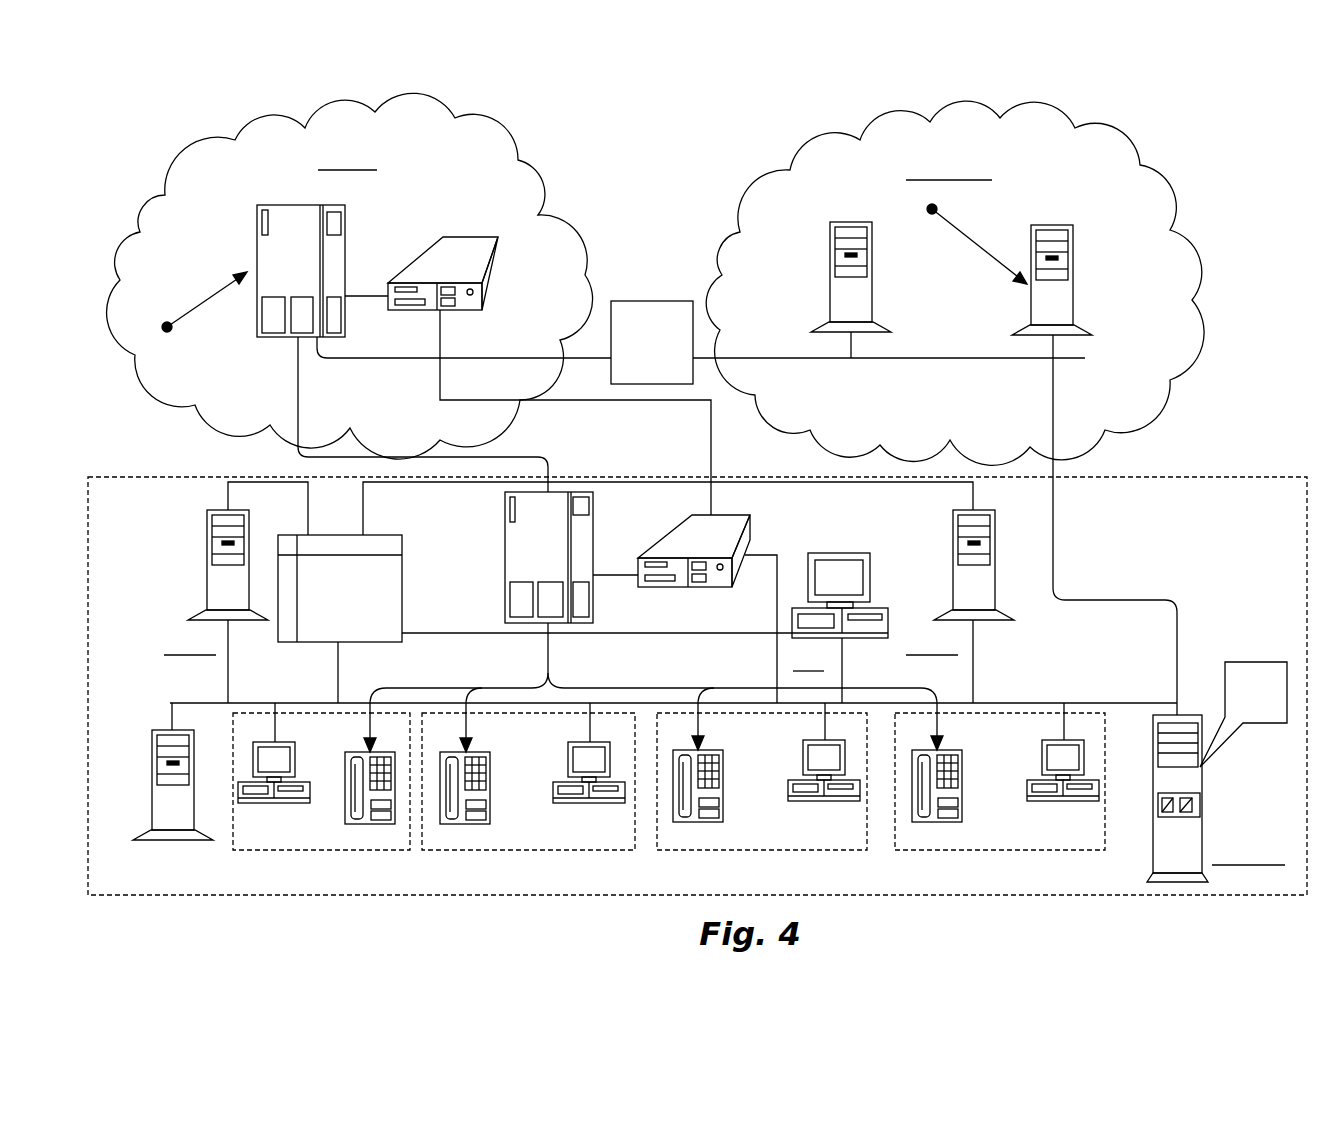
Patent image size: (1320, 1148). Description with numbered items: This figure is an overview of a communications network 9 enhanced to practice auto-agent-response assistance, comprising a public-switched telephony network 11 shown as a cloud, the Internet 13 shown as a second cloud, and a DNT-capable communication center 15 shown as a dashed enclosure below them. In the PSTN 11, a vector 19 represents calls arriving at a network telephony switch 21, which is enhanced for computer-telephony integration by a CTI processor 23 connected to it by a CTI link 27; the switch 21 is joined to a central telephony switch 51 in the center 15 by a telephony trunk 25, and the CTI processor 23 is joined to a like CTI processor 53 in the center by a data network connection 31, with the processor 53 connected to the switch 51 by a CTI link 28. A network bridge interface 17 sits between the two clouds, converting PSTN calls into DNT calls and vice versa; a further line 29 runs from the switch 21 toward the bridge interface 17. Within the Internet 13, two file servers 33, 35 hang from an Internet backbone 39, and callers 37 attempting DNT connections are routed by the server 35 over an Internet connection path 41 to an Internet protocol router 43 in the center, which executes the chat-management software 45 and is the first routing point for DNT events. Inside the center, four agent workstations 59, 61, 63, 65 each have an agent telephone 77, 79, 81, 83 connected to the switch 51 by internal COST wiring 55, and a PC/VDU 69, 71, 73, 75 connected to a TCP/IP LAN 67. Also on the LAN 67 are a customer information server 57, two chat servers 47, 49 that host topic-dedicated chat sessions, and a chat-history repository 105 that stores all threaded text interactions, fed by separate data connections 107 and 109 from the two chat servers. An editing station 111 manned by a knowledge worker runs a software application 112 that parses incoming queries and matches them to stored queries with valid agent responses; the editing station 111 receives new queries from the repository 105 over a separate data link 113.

The communications network 9 is at (1166, 197).
The public-switched-telephony-network 11 is at (492, 179).
The Internet network 13 is at (913, 118).
The communication center 15 is at (122, 462).
The network bridge interface 17 is at (654, 286).
The vector 19 is at (210, 297).
The network telephony switch 21 is at (257, 250).
The CTI processor 23 is at (500, 272).
The telephony trunk 25 is at (297, 400).
The CTI link 27 is at (358, 288).
The CTI link 28 is at (605, 568).
The connection line 29 is at (420, 358).
The data network connection 31 is at (659, 400).
The file server 33 is at (830, 292).
The file server 35 is at (1075, 270).
The callers 37 is at (963, 236).
The Internet backbone 39 is at (932, 364).
The Internet connection path 41 is at (1055, 563).
The Internet protocol router 43 is at (1202, 823).
The chat-management software 45 is at (1257, 662).
The chat server 47 is at (207, 565).
The chat server 49 is at (993, 555).
The central telephony switch 51 is at (505, 567).
The CTI processor 53 is at (697, 588).
The internal COST wiring 55 is at (668, 683).
The customer information server 57 is at (150, 807).
The agent workstation 59 is at (335, 850).
The agent workstation 61 is at (560, 850).
The agent workstation 63 is at (778, 850).
The agent workstation 65 is at (1020, 850).
The LAN 67 is at (1012, 700).
The PC/VDU 69 is at (268, 804).
The PC/VDU 71 is at (593, 804).
The PC/VDU 73 is at (825, 802).
The PC/VDU 75 is at (1067, 802).
The agent telephone 77 is at (343, 788).
The agent telephone 79 is at (493, 793).
The agent telephone 81 is at (727, 797).
The agent telephone 83 is at (965, 797).
The repository 105 is at (320, 645).
The data connection 107 is at (227, 493).
The data connection 109 is at (463, 483).
The editing station 111 is at (838, 553).
The software application 112 is at (857, 588).
The data link 113 is at (470, 634).